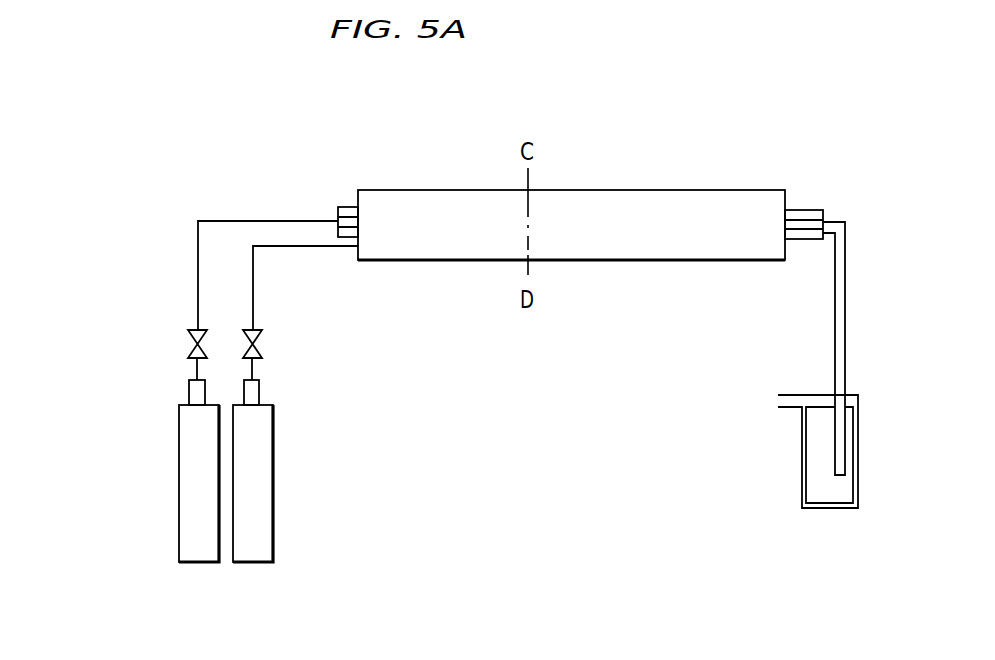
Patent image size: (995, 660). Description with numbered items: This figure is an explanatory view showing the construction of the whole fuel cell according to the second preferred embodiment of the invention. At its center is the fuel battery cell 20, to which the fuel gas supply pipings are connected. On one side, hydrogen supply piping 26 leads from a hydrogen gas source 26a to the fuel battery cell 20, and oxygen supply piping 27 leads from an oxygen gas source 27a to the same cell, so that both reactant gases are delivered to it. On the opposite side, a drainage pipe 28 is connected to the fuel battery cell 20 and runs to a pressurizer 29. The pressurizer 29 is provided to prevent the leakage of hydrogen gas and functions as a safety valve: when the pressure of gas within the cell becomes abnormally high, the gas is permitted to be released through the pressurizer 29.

The fuel battery cell 20 is at (610, 184).
The hydrogen supply piping 26 is at (277, 220).
The oxygen supply piping 27 is at (315, 250).
The hydrogen gas source 26a is at (187, 483).
The oxygen gas source 27a is at (260, 470).
The drainage pipe 28 is at (832, 335).
The pressurizer 29 is at (800, 458).